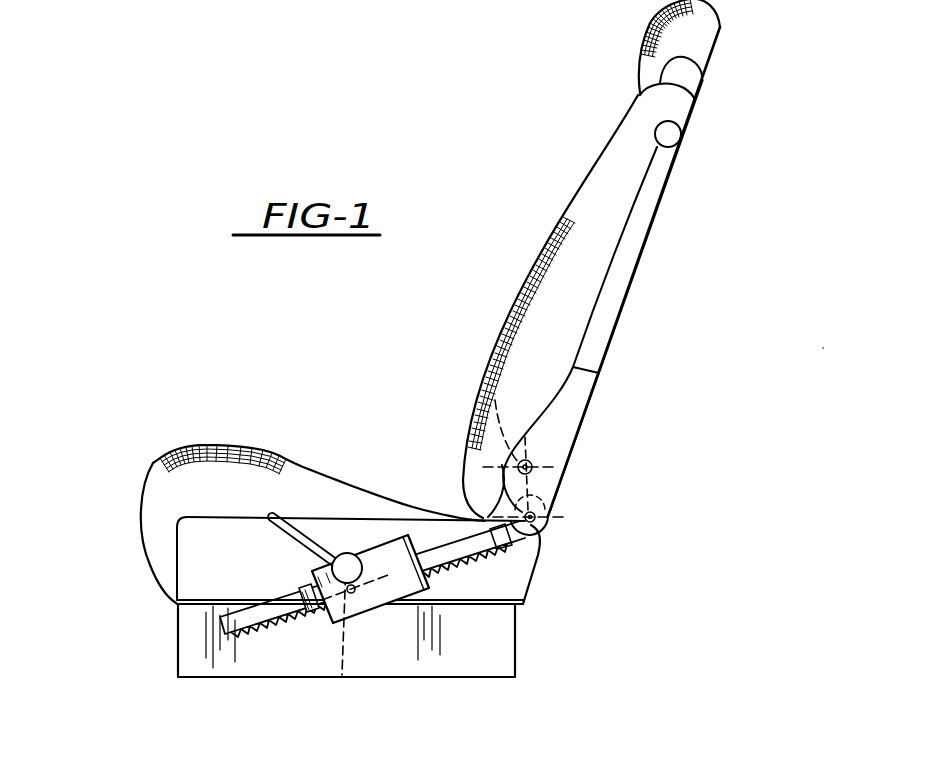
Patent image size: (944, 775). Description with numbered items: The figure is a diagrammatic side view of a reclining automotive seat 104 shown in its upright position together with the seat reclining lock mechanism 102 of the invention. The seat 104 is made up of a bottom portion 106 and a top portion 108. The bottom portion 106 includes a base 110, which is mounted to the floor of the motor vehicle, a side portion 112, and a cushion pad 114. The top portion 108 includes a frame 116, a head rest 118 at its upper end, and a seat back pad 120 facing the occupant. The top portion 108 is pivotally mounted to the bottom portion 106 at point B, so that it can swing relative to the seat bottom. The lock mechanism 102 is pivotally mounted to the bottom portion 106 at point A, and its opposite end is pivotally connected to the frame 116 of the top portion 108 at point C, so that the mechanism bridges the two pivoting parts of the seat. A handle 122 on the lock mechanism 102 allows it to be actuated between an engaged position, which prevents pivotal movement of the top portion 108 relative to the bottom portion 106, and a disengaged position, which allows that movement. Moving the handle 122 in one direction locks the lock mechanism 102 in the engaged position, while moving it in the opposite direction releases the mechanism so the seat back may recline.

The seat reclining lock mechanism 102 is at (427, 643).
The reclining automotive seat 104 is at (391, 398).
The bottom portion 106 is at (157, 577).
The top portion 108 is at (619, 322).
The base 110 is at (176, 637).
The side portion 112 is at (534, 585).
The cushion pad 114 is at (158, 460).
The frame 116 is at (590, 400).
The head rest 118 is at (717, 43).
The seat back pad 120 is at (553, 232).
The handle 122 is at (271, 510).
The point A is at (341, 672).
The point B is at (487, 400).
The point C is at (548, 527).